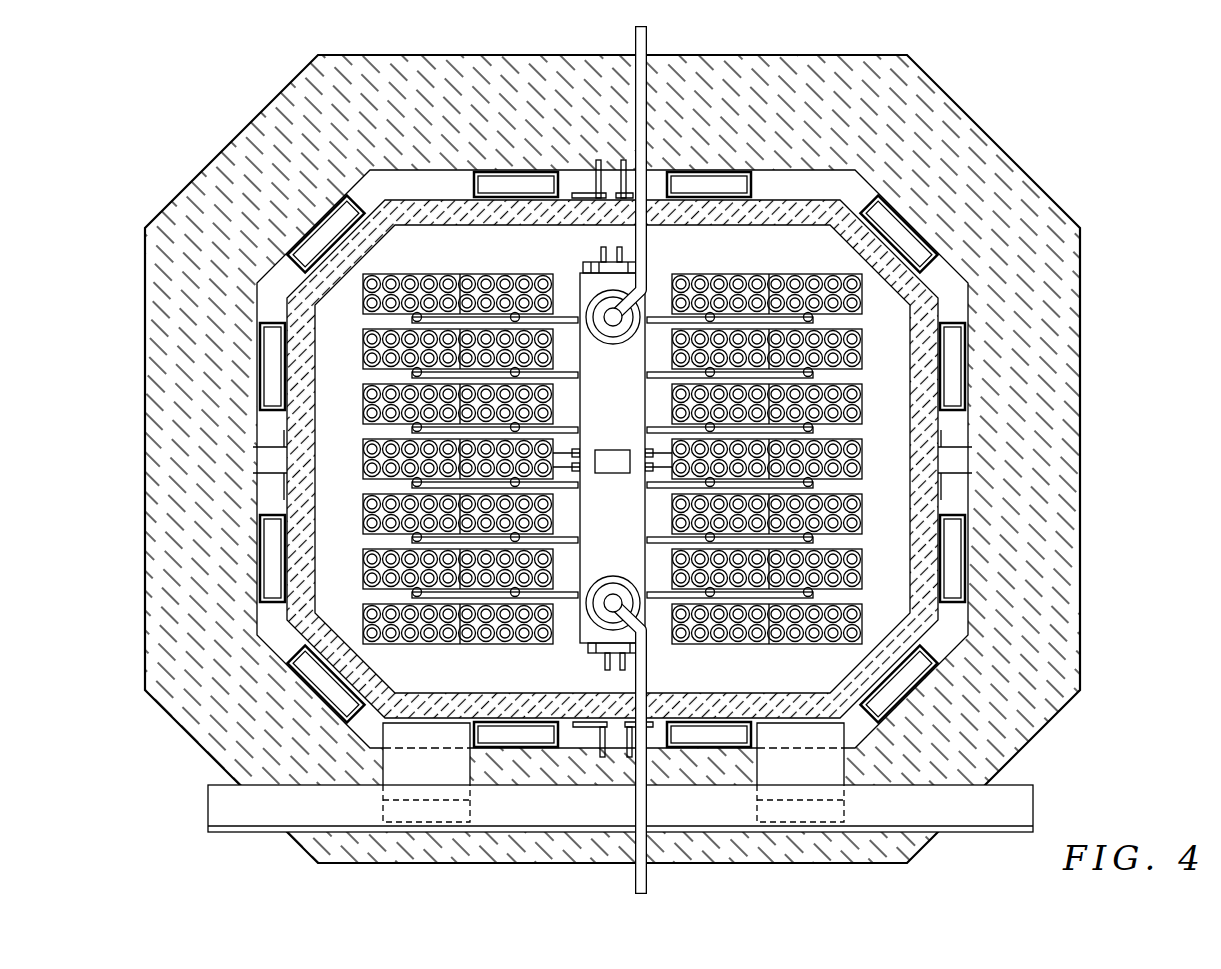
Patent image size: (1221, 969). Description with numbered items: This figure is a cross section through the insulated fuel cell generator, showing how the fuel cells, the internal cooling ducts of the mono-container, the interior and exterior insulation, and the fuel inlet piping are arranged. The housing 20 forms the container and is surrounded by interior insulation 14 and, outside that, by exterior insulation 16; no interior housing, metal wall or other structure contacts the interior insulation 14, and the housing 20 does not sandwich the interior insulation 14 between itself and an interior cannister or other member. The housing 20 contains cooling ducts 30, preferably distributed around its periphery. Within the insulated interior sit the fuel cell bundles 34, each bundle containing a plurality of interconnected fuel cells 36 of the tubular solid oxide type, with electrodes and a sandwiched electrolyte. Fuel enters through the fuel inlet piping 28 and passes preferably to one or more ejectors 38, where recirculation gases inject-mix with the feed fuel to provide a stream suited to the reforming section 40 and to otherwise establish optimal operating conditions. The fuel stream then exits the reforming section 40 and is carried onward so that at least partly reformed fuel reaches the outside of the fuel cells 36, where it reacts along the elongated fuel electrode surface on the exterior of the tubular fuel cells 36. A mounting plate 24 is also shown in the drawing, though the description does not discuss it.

The interior insulation 14 is at (475, 698).
The exterior insulation 16 is at (505, 865).
The housing 20 is at (430, 727).
The mounting plate 24 is at (235, 837).
The fuel inlet piping 28 is at (648, 40).
The cooling ducts 30 is at (282, 322).
The fuel cell bundles 34 is at (363, 408).
The fuel cells 36 is at (507, 272).
The ejectors 38 is at (609, 348).
The reforming section 40 is at (577, 648).